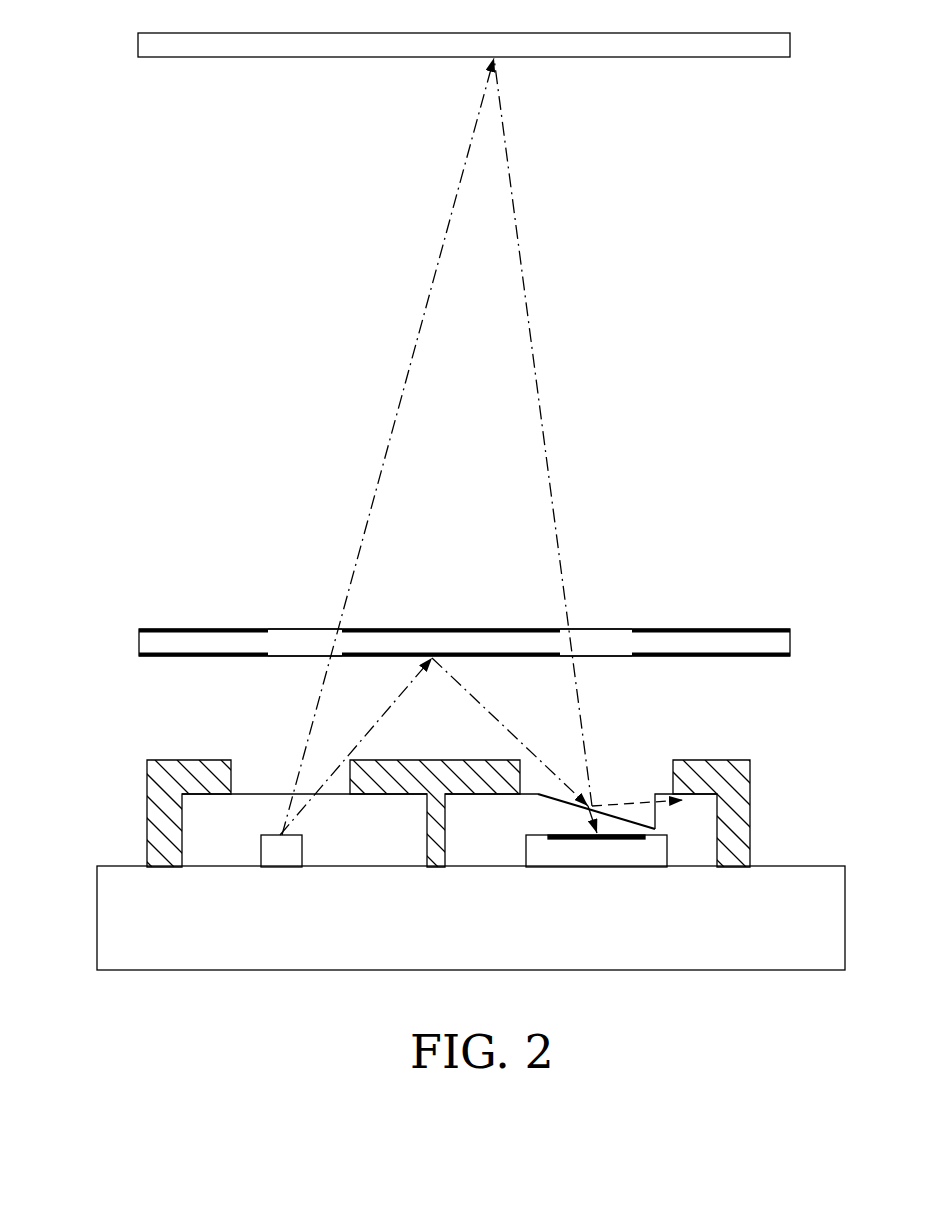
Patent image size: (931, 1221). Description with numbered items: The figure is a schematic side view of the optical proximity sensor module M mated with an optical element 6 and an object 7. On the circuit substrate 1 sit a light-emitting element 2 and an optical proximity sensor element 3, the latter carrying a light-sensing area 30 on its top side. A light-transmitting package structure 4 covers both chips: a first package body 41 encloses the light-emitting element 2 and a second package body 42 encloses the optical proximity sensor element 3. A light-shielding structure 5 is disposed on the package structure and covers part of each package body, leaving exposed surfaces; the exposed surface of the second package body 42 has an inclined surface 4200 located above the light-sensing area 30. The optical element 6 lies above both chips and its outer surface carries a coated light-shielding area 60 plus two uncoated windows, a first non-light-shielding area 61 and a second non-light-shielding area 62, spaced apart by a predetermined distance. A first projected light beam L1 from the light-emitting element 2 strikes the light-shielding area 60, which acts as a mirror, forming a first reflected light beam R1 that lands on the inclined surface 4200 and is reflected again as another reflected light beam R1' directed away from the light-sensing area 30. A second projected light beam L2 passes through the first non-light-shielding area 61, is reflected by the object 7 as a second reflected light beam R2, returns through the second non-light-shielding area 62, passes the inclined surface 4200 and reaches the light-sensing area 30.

The circuit substrate 1 is at (97, 920).
The light-emitting element 2 is at (280, 868).
The optical proximity sensor element 3 is at (598, 892).
The light-sensing area 30 is at (617, 841).
The light-transmitting package structure 4 is at (449, 878).
The first package body 41 is at (402, 851).
The second package body 42 is at (581, 859).
The inclined surface 4200 is at (573, 803).
The light-shielding structure 5 is at (147, 813).
The optical element 6 is at (428, 642).
The light-shielding area 60 is at (228, 628).
The first non-light-shielding area 61 is at (300, 628).
The second non-light-shielding area 62 is at (603, 628).
The object 7 is at (138, 46).
The optical proximity sensor module M is at (444, 843).
The first projected light beam L1 is at (372, 728).
The second projected light beam L2 is at (387, 445).
The first reflected light beam R1 is at (514, 745).
The another reflected light beam R1' is at (637, 757).
The second reflected light beam R2 is at (551, 478).